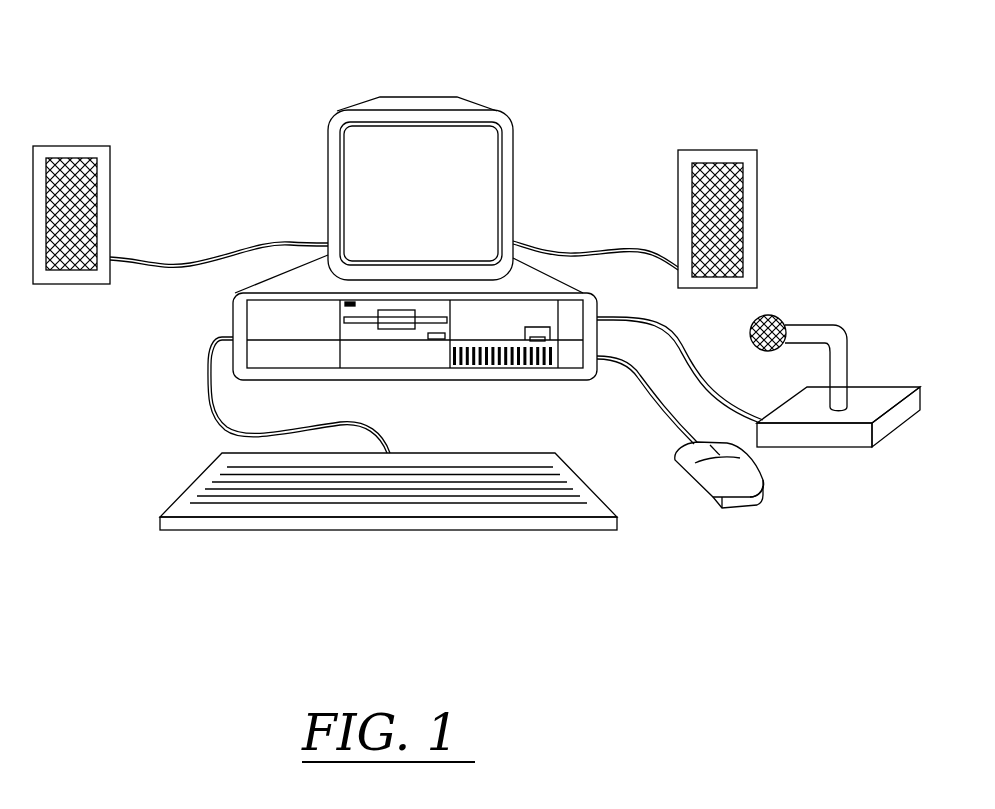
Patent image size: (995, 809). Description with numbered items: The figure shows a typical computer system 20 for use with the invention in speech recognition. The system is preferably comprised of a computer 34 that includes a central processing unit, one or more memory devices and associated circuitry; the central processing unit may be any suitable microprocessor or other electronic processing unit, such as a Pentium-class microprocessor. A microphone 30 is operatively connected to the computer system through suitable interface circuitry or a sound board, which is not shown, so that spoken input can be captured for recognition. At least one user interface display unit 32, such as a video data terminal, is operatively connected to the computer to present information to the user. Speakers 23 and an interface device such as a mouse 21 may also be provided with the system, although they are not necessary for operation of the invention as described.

The computer system 20 is at (255, 68).
The mouse 21 is at (740, 510).
The speakers 23 is at (75, 146).
The microphone 30 is at (843, 447).
The user interface display unit 32 is at (515, 163).
The computer 34 is at (530, 268).